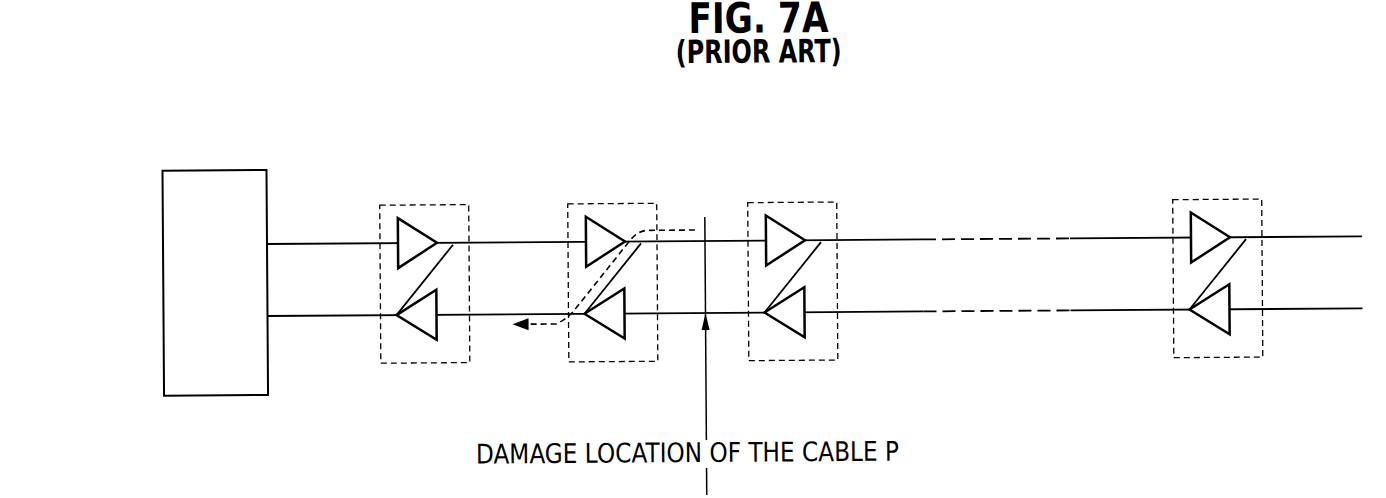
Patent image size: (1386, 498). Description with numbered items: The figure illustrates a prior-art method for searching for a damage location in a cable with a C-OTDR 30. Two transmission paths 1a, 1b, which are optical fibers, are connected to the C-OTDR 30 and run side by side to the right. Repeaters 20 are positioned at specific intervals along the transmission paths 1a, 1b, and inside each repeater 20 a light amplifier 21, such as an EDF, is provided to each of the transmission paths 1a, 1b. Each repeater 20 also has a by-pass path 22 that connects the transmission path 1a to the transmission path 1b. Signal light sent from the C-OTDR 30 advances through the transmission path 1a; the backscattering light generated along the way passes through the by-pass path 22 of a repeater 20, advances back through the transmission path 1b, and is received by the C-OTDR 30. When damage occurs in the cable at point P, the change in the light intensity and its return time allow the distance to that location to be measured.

The C-OTDR 30 is at (256, 170).
The repeater 20 is at (823, 241).
The light amplifier 21 is at (440, 231).
The by-pass path 22 is at (439, 269).
The transmission path 1a is at (328, 241).
The transmission path 1b is at (322, 318).